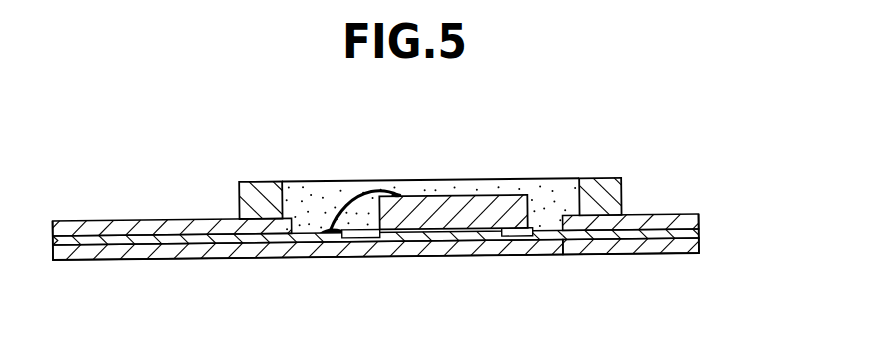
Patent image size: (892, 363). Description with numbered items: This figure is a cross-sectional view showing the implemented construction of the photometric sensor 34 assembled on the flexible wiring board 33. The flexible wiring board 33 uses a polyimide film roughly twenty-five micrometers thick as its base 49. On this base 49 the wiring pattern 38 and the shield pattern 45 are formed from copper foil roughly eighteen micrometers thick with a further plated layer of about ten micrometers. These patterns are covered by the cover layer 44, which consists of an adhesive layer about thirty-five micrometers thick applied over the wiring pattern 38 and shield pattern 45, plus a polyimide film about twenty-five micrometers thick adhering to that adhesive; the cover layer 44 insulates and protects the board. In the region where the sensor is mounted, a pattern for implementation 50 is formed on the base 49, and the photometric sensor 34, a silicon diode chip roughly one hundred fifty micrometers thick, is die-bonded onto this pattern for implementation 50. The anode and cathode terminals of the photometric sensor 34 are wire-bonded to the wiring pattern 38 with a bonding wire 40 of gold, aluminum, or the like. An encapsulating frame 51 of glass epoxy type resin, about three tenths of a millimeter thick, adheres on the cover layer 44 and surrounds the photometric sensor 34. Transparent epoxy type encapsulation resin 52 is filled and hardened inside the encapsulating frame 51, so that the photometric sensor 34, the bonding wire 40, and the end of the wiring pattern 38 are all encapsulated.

The flexible wiring board 33 is at (143, 264).
The photometric sensor 34 is at (480, 212).
The wiring pattern 38 is at (200, 242).
The bonding wire 40 is at (348, 191).
The cover layer 44 is at (143, 226).
The shield pattern 45 is at (682, 240).
The base 49 is at (602, 250).
The pattern for implementation 50 is at (437, 240).
The encapsulating frame 51 is at (600, 182).
The encapsulation resin 52 is at (553, 196).